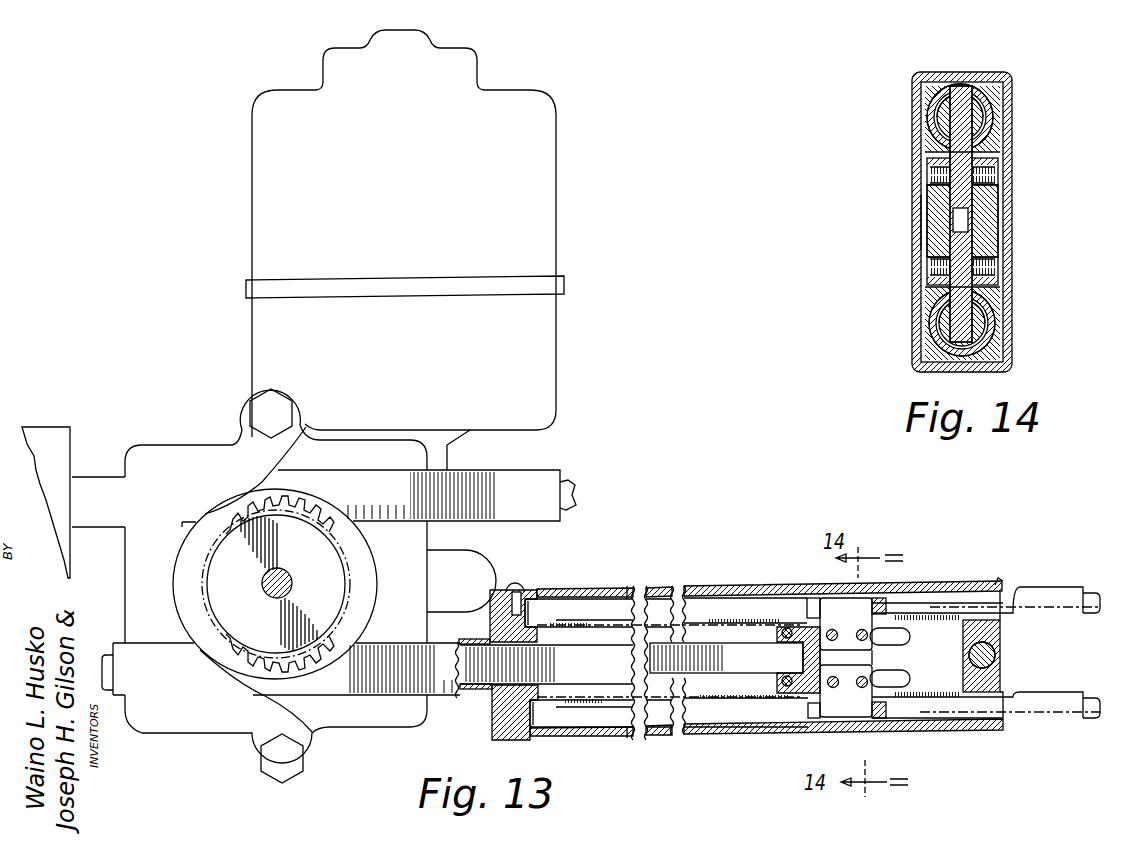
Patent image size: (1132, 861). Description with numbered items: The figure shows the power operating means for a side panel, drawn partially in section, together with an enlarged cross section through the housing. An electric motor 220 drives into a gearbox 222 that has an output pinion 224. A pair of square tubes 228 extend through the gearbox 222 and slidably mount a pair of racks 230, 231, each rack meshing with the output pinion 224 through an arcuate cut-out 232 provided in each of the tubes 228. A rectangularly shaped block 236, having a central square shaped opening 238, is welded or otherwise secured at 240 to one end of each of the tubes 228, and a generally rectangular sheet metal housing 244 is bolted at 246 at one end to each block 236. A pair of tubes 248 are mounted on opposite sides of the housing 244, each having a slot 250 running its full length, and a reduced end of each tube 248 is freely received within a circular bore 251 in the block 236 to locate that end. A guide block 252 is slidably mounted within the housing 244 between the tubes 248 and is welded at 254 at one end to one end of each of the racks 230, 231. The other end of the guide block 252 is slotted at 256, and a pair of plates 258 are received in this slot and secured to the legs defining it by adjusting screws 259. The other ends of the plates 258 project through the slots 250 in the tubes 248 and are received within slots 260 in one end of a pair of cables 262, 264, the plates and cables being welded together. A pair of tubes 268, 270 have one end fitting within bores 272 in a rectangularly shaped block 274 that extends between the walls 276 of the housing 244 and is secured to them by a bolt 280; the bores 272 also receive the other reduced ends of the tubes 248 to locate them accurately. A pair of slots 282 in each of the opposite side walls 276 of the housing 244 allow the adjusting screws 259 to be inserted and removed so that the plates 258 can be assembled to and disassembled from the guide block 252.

In FIG. 13, the electric motor 220 is at (272, 242).
In FIG. 13, the gearbox 222 is at (196, 448).
In FIG. 13, the output pinion 224 is at (318, 523).
In FIG. 13, the square tubes 228 is at (520, 483).
In FIG. 13, the rack 230 is at (266, 663).
In FIG. 14, the rack 230 is at (961, 214).
In FIG. 13, the rack 231 is at (307, 522).
In FIG. 13, the arcuate cut-out 232 is at (262, 492).
In FIG. 13, the rectangularly shaped block 236 is at (500, 592).
In FIG. 13, the central square shaped opening 238 is at (500, 706).
In FIG. 13, the weld 240 is at (492, 690).
In FIG. 13, the sheet metal housing 244 is at (737, 577).
In FIG. 14, the sheet metal housing 244 is at (1025, 356).
In FIG. 13, the bolt 246 is at (518, 590).
In FIG. 13, the tubes 248 is at (688, 588).
In FIG. 14, the tubes 248 is at (935, 97).
In FIG. 13, the slot 250 is at (598, 621).
In FIG. 14, the slot 250 is at (990, 112).
In FIG. 13, the circular bore 251 is at (538, 617).
In FIG. 13, the guide block 252 is at (800, 660).
In FIG. 14, the guide block 252 is at (990, 212).
In FIG. 13, the weld 254 is at (790, 612).
In FIG. 13, the slot 256 is at (808, 670).
In FIG. 14, the slot 256 is at (970, 222).
In FIG. 13, the plates 258 is at (830, 604).
In FIG. 14, the plates 258 is at (965, 192).
In FIG. 13, the adjusting screws 259 is at (862, 630).
In FIG. 14, the adjusting screws 259 is at (930, 178).
In FIG. 13, the slots 260 is at (808, 604).
In FIG. 14, the slots 260 is at (950, 118).
In FIG. 13, the cable 262 is at (1093, 720).
In FIG. 14, the cable 262 is at (950, 336).
In FIG. 13, the cable 264 is at (1092, 594).
In FIG. 14, the cable 264 is at (945, 126).
In FIG. 13, the tube 268 is at (1040, 720).
In FIG. 13, the tube 270 is at (1040, 590).
In FIG. 13, the bores 272 is at (968, 700).
In FIG. 13, the rectangularly shaped block 274 is at (1000, 684).
In FIG. 13, the walls 276 is at (597, 690).
In FIG. 14, the walls 276 is at (925, 328).
In FIG. 13, the bolt 280 is at (997, 656).
In FIG. 13, the slots 282 is at (905, 643).
In FIG. 14, the slots 282 is at (912, 250).